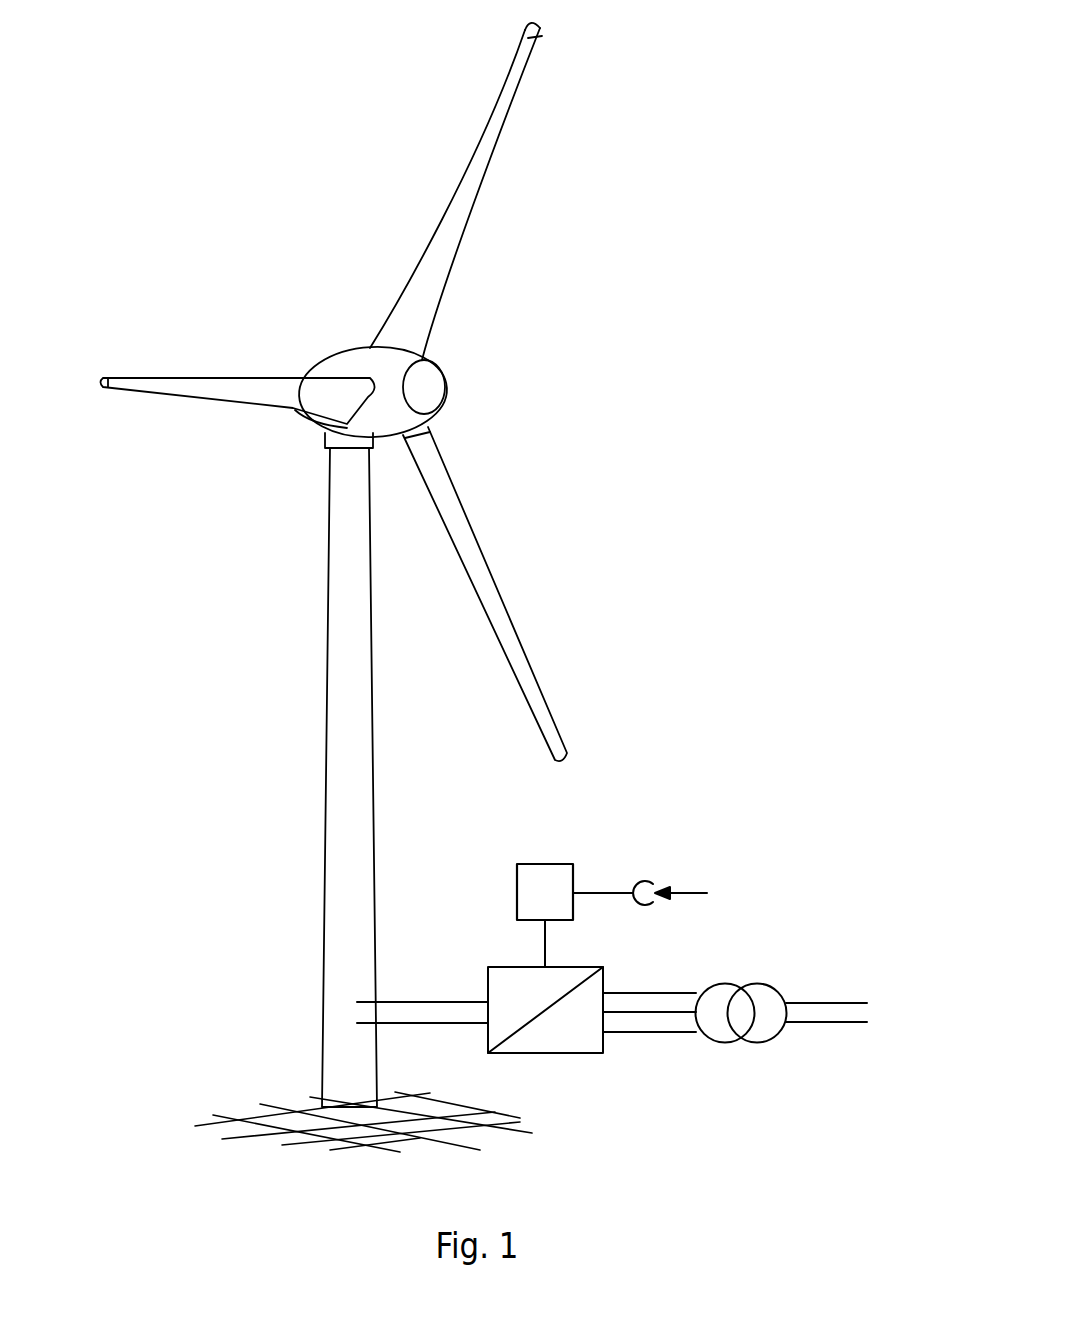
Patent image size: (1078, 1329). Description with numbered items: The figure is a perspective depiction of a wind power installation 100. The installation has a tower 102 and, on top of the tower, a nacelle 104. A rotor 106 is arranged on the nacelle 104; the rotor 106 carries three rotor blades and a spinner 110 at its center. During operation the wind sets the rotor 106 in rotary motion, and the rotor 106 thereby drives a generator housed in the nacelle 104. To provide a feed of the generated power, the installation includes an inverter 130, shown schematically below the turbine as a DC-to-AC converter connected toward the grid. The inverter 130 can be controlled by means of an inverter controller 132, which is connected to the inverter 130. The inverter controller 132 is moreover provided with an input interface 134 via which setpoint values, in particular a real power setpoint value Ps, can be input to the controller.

The wind power installation 100 is at (288, 512).
The tower 102 is at (340, 873).
The nacelle 104 is at (343, 363).
The rotor 106 is at (511, 314).
The spinner 110 is at (433, 382).
The inverter 130 is at (603, 1043).
The inverter controller 132 is at (552, 870).
The input interface 134 is at (642, 870).